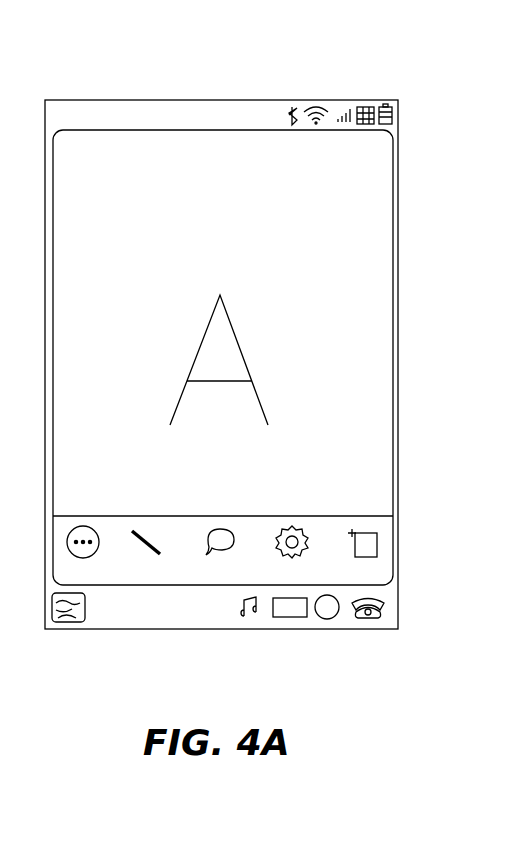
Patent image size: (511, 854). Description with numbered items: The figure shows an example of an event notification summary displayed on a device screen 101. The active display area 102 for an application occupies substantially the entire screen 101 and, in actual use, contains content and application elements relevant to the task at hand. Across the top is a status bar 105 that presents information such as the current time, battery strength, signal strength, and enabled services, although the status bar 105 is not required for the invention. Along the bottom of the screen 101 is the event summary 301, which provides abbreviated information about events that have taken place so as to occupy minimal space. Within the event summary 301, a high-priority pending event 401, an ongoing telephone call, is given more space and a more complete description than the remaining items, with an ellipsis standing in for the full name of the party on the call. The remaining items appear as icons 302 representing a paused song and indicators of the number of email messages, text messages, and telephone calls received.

The status bar 105 is at (263, 378).
The active display area 102 is at (244, 232).
The event summary 301 is at (270, 656).
The screen 101 is at (58, 633).
The high-priority pending event 401 is at (126, 619).
The icons 302 is at (305, 649).